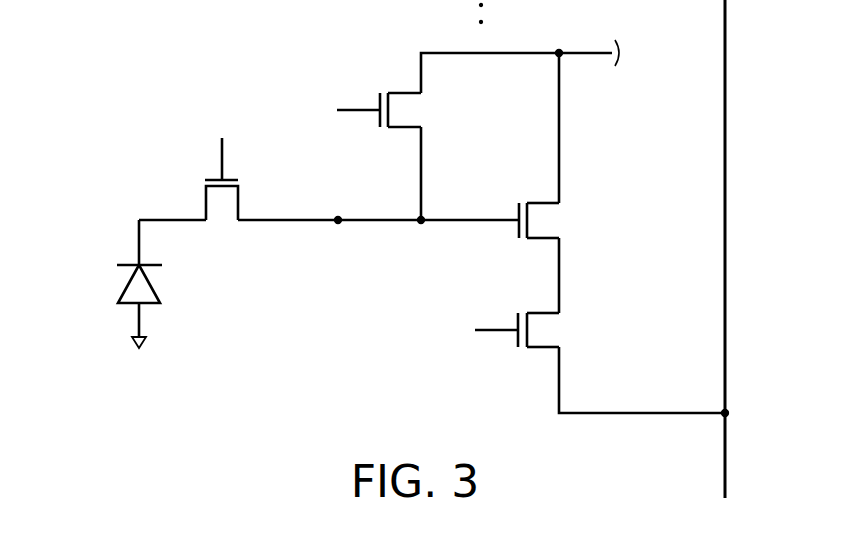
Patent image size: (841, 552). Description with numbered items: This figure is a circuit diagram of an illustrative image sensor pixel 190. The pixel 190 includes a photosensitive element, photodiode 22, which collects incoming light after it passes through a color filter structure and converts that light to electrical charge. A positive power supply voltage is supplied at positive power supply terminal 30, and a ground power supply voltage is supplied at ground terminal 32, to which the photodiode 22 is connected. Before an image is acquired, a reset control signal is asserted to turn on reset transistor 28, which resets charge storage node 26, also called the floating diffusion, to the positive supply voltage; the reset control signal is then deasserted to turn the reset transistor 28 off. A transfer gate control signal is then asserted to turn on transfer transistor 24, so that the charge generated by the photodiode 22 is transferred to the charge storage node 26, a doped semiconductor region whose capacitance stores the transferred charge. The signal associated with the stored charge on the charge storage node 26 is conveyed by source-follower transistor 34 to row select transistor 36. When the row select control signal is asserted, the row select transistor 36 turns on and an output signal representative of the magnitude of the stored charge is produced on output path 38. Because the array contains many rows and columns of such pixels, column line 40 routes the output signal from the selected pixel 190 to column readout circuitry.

The pixel 190 is at (220, 44).
The photodiode 22 is at (134, 287).
The transfer transistor 24 is at (209, 205).
The charge storage node 26 is at (338, 217).
The reset transistor 28 is at (404, 96).
The positive power supply terminal 30 is at (593, 52).
The ground terminal 32 is at (132, 343).
The source-follower transistor 34 is at (544, 205).
The row select transistor 36 is at (545, 318).
The output path 38 is at (645, 416).
The column line 40 is at (727, 260).